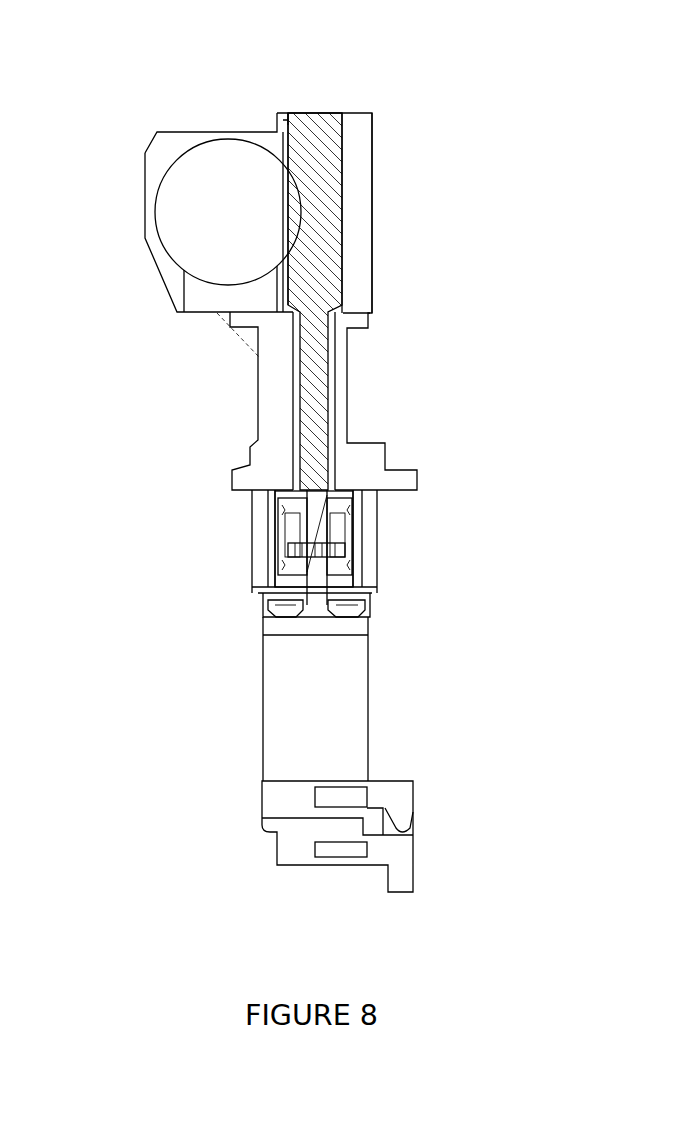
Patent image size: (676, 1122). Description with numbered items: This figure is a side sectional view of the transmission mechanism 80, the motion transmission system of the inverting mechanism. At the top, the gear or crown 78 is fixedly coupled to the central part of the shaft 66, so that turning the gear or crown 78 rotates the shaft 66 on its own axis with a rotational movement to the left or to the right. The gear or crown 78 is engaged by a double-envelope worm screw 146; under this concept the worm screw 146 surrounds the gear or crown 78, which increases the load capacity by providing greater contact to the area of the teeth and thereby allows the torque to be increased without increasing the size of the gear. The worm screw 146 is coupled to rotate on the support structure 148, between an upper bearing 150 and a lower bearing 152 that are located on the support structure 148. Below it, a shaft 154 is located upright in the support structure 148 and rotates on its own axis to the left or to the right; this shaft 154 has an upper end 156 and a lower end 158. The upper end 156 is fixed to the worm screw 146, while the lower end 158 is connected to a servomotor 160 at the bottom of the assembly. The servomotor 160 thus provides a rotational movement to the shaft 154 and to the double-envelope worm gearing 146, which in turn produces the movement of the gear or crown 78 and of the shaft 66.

The transmission mechanism 80 is at (248, 108).
The shaft 66 is at (228, 212).
The gear or crown 78 is at (178, 237).
The double-envelope worm screw 146 is at (315, 213).
The support structure 148 is at (372, 208).
The upper bearing 150 is at (338, 138).
The lower bearing 152 is at (340, 292).
The shaft 154 is at (315, 398).
The upper end 156 is at (315, 128).
The lower end 158 is at (318, 555).
The servomotor 160 is at (370, 733).